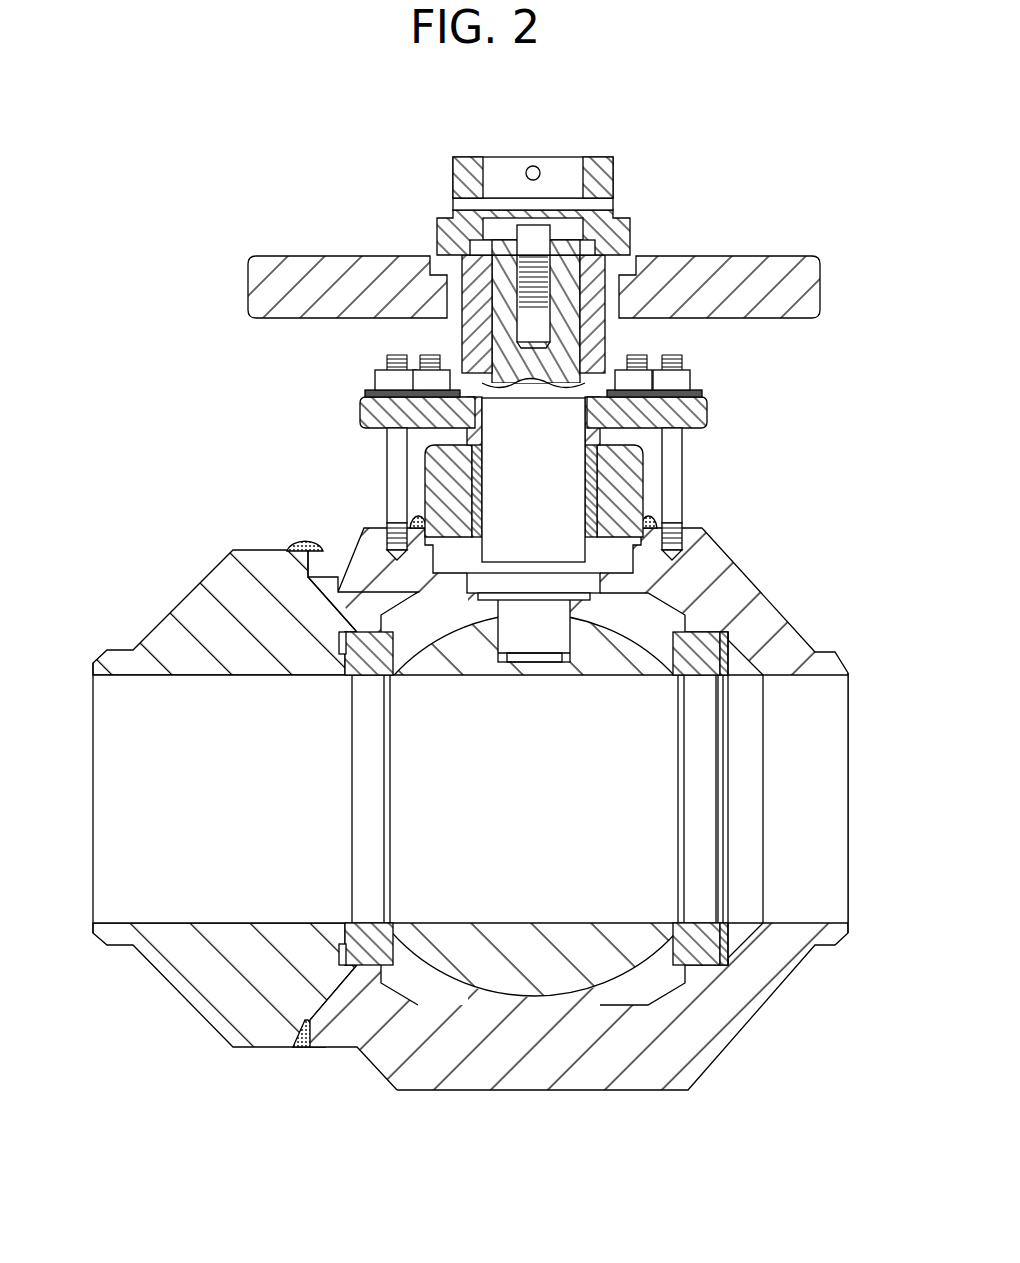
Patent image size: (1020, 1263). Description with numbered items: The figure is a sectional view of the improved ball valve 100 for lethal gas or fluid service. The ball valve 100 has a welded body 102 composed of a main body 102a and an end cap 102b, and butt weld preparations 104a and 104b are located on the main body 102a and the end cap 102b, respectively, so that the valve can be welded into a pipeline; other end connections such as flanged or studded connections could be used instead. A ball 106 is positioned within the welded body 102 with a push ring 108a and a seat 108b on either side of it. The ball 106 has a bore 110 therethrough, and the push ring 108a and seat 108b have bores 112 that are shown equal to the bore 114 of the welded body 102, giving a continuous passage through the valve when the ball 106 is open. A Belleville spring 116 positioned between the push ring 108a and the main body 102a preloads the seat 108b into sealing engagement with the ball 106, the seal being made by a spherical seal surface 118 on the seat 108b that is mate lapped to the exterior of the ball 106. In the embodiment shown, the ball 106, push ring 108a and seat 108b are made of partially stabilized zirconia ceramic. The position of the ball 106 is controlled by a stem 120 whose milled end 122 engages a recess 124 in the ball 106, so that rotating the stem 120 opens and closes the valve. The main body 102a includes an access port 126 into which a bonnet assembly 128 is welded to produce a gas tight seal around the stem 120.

The ball valve 100 is at (196, 518).
The welded body 102 is at (372, 1062).
The main body 102a is at (480, 1090).
The end cap 102b is at (180, 993).
The butt weld preparation 104a is at (848, 938).
The butt weld preparation 104b is at (100, 938).
The ball 106 is at (591, 997).
The push ring 108a is at (719, 632).
The seat 108b is at (352, 630).
The bore 110 is at (535, 921).
The bores 112 is at (370, 676).
The bore 114 is at (838, 676).
The Belleville spring 116 is at (730, 935).
The spherical seal surface 118 is at (390, 672).
The stem 120 is at (640, 322).
The milled end 122 is at (497, 642).
The recess 124 is at (513, 665).
The access port 126 is at (647, 587).
The bonnet assembly 128 is at (722, 427).